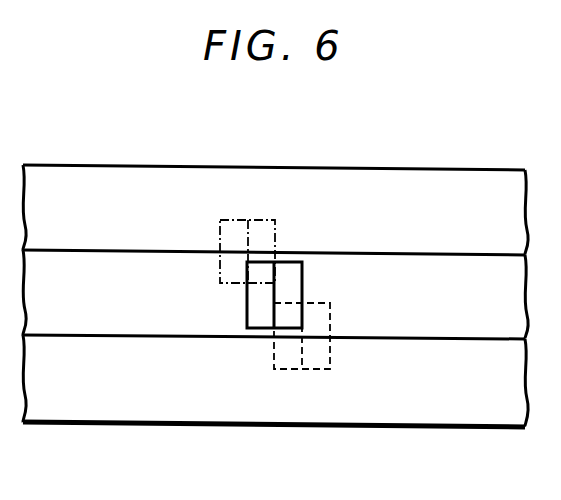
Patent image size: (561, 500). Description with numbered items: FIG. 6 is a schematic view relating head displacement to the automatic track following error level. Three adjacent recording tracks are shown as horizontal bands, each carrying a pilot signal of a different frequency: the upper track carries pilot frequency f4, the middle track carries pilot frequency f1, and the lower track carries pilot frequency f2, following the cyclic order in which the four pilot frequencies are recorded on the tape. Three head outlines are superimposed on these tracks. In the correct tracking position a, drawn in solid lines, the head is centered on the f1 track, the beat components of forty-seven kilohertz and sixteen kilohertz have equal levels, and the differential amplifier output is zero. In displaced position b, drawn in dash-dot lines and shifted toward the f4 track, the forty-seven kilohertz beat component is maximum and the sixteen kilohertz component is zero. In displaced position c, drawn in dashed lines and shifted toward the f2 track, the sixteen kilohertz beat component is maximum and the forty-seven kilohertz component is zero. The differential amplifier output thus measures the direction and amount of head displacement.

The correct tracking position a is at (296, 262).
The displaced head position b is at (226, 220).
The displaced head position c is at (317, 370).
The pilot signal frequency f4 is at (275, 210).
The pilot signal frequency f1 is at (275, 294).
The pilot signal frequency f2 is at (275, 381).